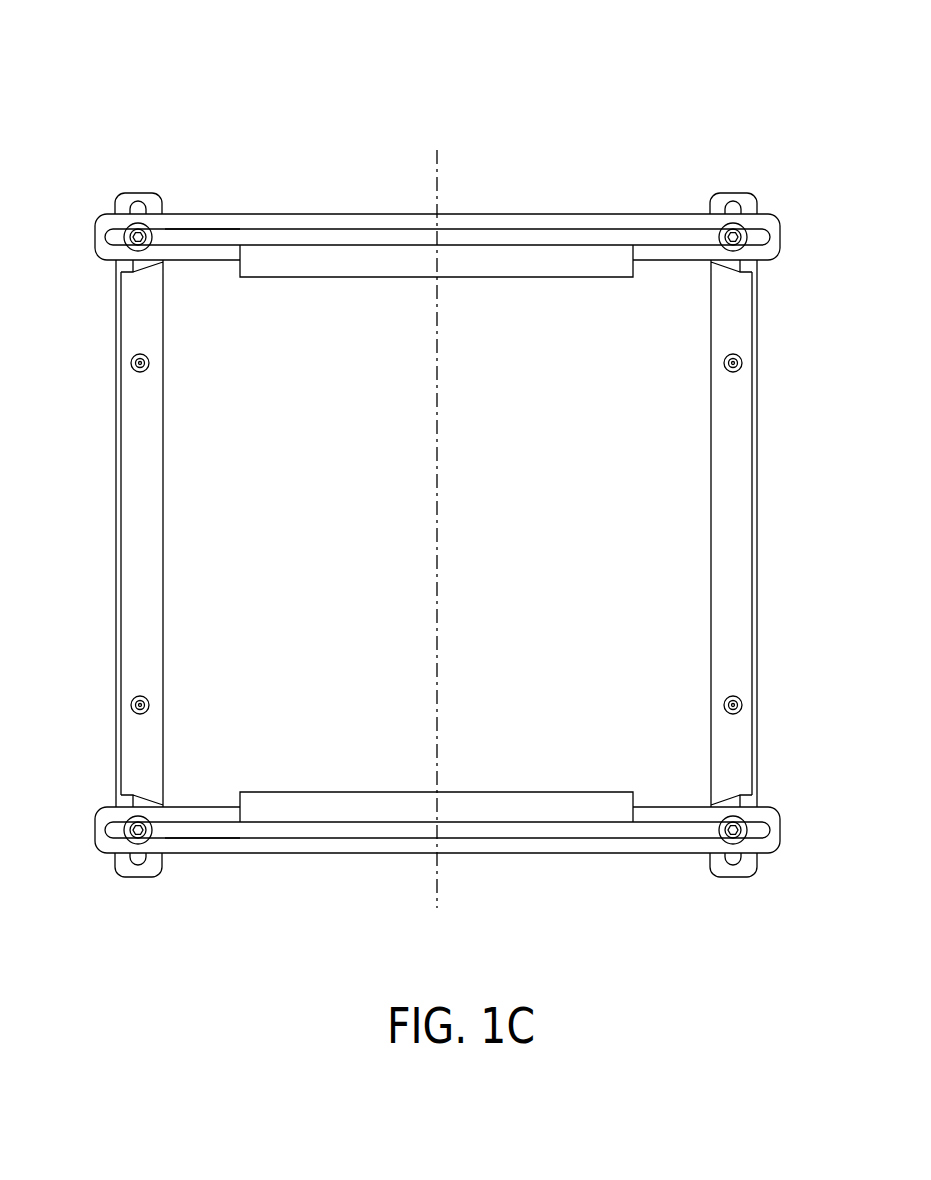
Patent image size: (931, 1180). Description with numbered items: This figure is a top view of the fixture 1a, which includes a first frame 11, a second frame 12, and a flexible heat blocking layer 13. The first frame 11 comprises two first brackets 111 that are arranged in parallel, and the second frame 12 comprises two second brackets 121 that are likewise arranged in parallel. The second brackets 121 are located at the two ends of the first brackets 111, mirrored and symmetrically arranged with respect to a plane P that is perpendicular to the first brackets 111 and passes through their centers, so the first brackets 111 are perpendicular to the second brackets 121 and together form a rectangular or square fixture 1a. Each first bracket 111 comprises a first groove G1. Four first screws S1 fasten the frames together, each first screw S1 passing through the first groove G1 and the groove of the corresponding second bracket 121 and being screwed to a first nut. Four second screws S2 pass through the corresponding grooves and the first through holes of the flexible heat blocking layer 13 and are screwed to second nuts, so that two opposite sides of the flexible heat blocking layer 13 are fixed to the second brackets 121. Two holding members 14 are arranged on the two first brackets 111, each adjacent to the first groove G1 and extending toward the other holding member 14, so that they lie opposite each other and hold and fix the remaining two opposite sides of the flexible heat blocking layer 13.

The fixture 1a is at (160, 48).
The first frame 11 is at (287, 224).
The first bracket 111 is at (437, 533).
The second frame 12 is at (128, 200).
The second bracket 121 is at (435, 533).
The flexible heat blocking layer 13 is at (662, 524).
The holding member 14 is at (557, 262).
The first groove G1 is at (205, 238).
The plane P is at (436, 514).
The first screw S1 is at (134, 241).
The second screw S2 is at (132, 359).